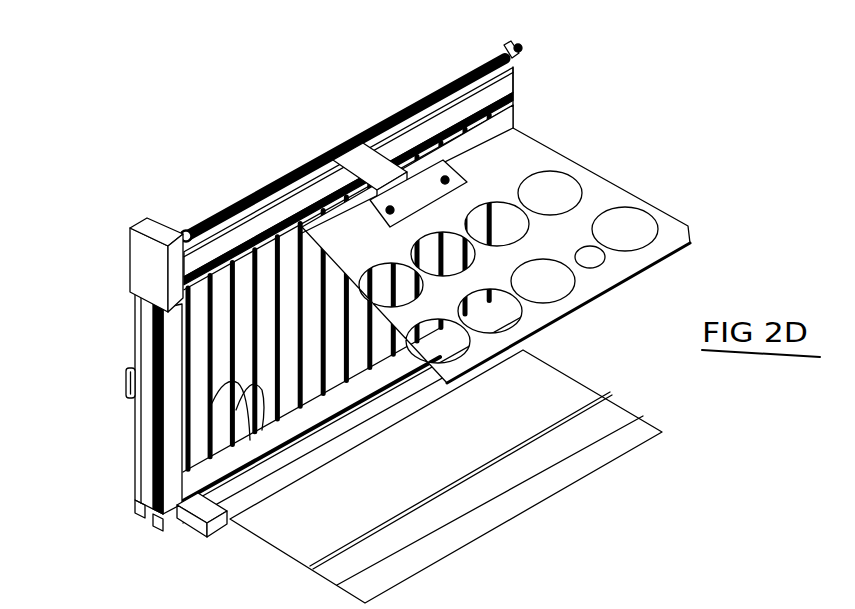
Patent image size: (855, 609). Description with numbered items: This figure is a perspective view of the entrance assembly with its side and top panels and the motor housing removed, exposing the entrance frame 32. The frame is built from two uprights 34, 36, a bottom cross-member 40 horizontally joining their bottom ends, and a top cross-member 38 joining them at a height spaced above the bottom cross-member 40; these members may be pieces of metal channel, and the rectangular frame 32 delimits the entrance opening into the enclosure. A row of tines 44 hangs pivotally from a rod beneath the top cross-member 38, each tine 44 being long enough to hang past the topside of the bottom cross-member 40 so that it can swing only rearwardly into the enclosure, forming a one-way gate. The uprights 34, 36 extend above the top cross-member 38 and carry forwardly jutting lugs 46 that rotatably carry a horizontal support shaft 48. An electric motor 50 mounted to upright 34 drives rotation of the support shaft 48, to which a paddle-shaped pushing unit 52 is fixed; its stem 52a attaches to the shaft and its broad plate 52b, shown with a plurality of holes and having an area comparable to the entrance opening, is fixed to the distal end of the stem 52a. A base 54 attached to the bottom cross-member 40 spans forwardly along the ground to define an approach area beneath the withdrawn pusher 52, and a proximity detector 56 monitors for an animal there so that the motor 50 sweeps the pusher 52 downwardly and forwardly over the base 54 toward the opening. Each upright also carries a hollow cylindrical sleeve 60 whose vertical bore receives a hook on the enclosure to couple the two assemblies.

The entrance frame 32 is at (316, 291).
The upright 34 is at (137, 313).
The upright 36 is at (507, 128).
The top cross-member 38 is at (508, 94).
The bottom cross-member 40 is at (302, 460).
The tine 44 is at (250, 440).
The lug 46 is at (497, 46).
The support shaft 48 is at (432, 92).
The electric motor 50 is at (143, 267).
The paddle-shaped pushing unit 52 is at (507, 218).
The stem 52a is at (360, 163).
The broad plate 52b is at (598, 197).
The base 54 is at (513, 507).
The proximity detector 56 is at (197, 508).
The hollow cylindrical sleeve 60 is at (123, 390).